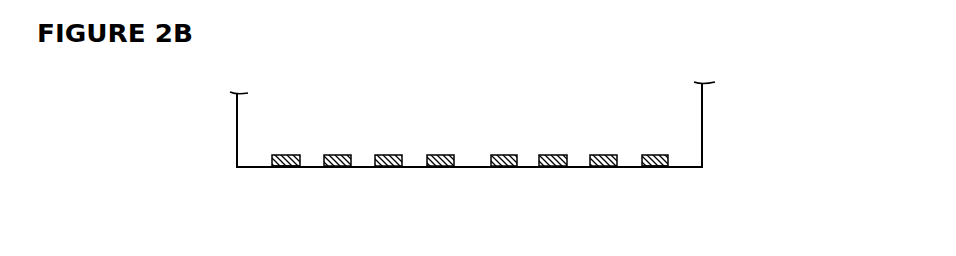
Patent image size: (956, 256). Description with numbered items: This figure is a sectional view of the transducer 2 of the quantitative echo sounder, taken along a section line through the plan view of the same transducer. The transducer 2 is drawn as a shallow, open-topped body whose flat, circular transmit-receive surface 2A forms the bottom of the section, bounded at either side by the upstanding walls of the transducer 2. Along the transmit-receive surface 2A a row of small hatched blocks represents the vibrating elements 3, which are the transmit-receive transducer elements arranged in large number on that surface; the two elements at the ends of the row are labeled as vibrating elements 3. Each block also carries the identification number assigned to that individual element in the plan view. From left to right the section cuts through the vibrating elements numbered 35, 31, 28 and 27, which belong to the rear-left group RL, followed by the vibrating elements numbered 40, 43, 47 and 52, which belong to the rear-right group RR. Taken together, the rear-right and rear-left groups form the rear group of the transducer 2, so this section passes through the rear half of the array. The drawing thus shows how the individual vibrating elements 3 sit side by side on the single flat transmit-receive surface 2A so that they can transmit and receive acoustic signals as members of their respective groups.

The transducer 2 is at (702, 127).
The transmit-receive surface 2A is at (469, 167).
The vibrating element 3 is at (282, 167).
The vibrating element 35 is at (286, 146).
The vibrating element 31 is at (337, 146).
The vibrating element 28 is at (388, 146).
The vibrating element 27 is at (440, 146).
The vibrating element 40 is at (504, 146).
The vibrating element 43 is at (553, 146).
The vibrating element 47 is at (603, 146).
The vibrating element 52 is at (655, 146).